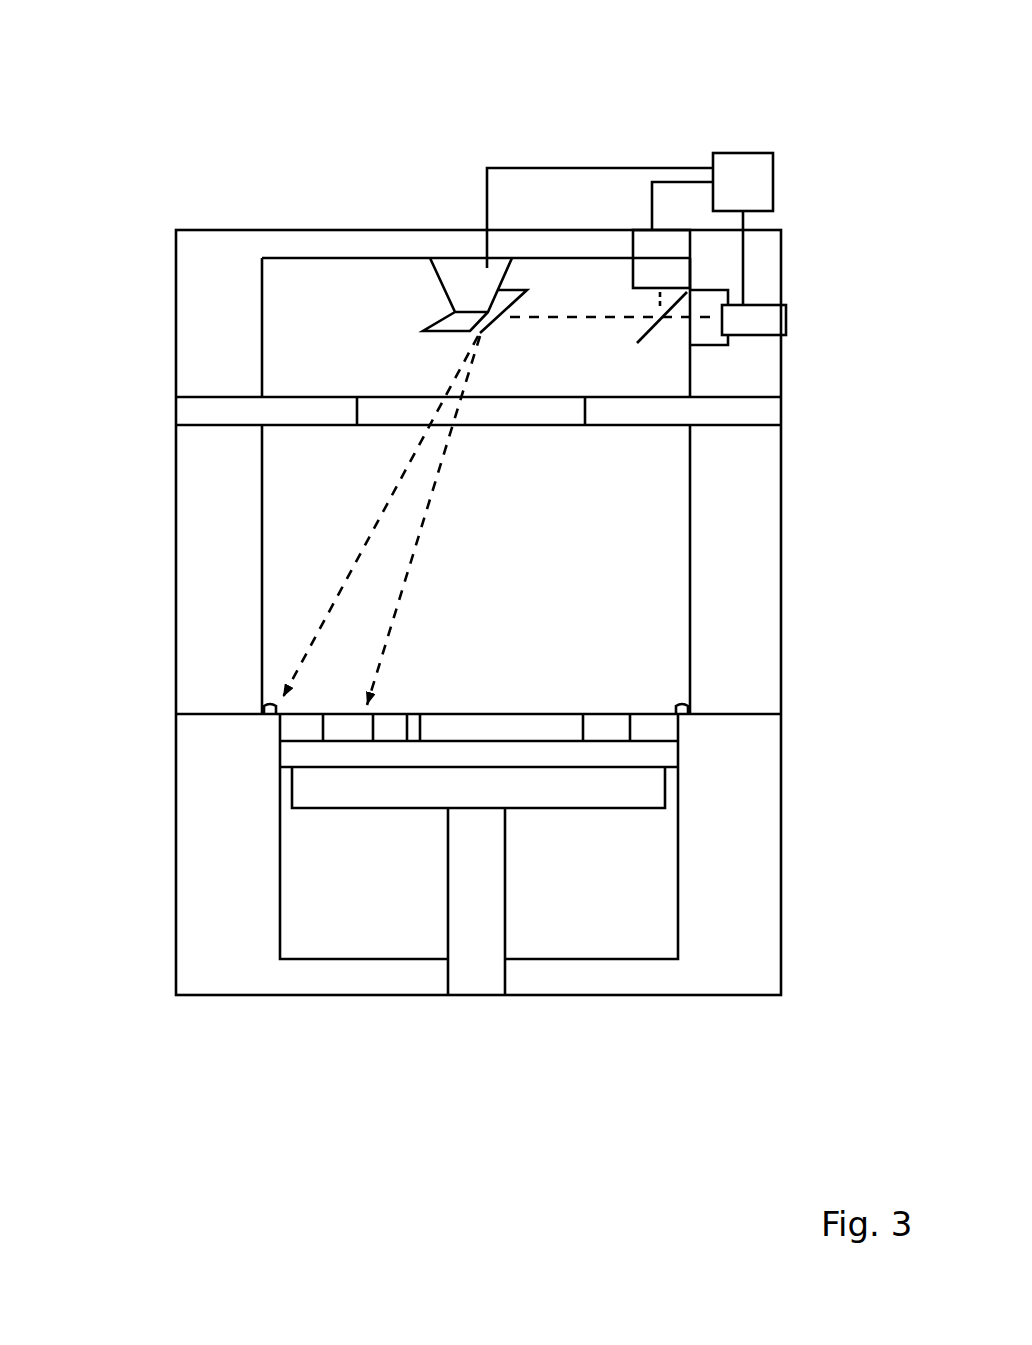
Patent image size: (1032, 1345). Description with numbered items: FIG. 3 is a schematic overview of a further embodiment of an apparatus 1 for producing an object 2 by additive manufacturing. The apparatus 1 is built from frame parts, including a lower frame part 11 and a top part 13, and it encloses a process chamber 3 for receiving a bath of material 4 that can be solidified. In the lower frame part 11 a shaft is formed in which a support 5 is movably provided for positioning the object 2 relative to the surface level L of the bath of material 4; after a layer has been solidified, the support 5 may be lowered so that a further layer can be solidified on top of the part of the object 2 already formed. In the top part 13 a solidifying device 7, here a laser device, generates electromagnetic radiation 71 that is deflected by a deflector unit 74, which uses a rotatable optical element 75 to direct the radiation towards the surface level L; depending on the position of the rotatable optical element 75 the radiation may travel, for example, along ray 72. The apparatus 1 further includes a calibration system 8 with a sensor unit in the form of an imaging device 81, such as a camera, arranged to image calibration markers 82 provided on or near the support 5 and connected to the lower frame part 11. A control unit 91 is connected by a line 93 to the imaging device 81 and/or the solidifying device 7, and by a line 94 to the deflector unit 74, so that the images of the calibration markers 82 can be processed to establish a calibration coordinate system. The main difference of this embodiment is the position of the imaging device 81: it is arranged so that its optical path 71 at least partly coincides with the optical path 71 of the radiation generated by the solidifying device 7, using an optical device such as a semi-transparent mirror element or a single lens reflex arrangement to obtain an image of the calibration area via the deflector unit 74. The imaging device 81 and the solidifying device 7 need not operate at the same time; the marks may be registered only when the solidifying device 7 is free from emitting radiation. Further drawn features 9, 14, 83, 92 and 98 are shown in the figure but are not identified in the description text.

The apparatus 1 is at (250, 200).
The object 2 is at (357, 727).
The process chamber 3 is at (642, 642).
The bath of material 4 is at (527, 728).
The support 5 is at (627, 832).
The solidifying device 7 is at (786, 322).
The calibration system 8 is at (410, 168).
The housing interior space 9 is at (857, 560).
The lower frame part 11 is at (213, 895).
The top part 13 is at (208, 312).
The partition plate 14 is at (313, 410).
The electromagnetic radiation 71 is at (563, 313).
The ray 72 is at (423, 533).
The deflector unit 74 is at (472, 275).
The rotatable optical element 75 is at (512, 258).
The imaging device 81 is at (645, 248).
The calibration markers 82 is at (275, 717).
The detection light beam 83 is at (362, 553).
The control unit 91 is at (760, 190).
The signal line 92 is at (747, 265).
The line 93 is at (690, 172).
The line 94 is at (515, 168).
The deflection mirror 98 is at (640, 343).
The surface level L is at (498, 714).